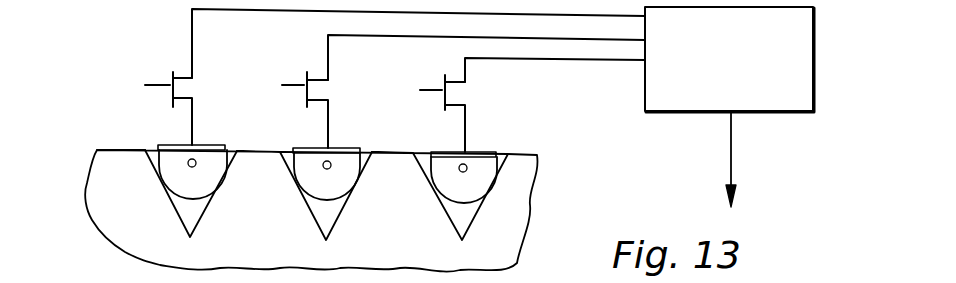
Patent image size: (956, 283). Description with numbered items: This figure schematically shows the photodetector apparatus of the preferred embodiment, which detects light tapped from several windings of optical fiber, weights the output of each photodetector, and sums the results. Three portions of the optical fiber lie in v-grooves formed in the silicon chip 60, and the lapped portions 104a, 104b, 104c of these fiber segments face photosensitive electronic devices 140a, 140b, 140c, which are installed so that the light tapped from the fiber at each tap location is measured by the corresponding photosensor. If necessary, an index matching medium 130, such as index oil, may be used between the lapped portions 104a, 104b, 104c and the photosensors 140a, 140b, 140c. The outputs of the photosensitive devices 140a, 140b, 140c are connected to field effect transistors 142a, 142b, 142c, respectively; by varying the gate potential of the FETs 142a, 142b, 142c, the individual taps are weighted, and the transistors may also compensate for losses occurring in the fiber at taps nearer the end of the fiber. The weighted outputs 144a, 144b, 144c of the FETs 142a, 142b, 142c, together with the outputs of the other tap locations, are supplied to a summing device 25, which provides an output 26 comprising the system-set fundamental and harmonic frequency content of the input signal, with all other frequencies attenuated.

The silicon chip 60 is at (118, 228).
The index matching medium 130 is at (152, 150).
The photosensitive electronic device 140a is at (210, 148).
The photosensitive electronic device 140b is at (294, 180).
The photosensitive electronic device 140c is at (432, 178).
The lapped portion of optical fiber 104a is at (158, 157).
The lapped portion of optical fiber 104b is at (344, 148).
The lapped portion of optical fiber 104c is at (488, 152).
The field effect transistor 142a is at (172, 76).
The field effect transistor 142b is at (305, 76).
The field effect transistor 142c is at (442, 88).
The output of FET 144a is at (232, 12).
The output of FET 144b is at (355, 37).
The output of FET 144c is at (524, 60).
The summing device 25 is at (813, 70).
The output 26 is at (729, 176).